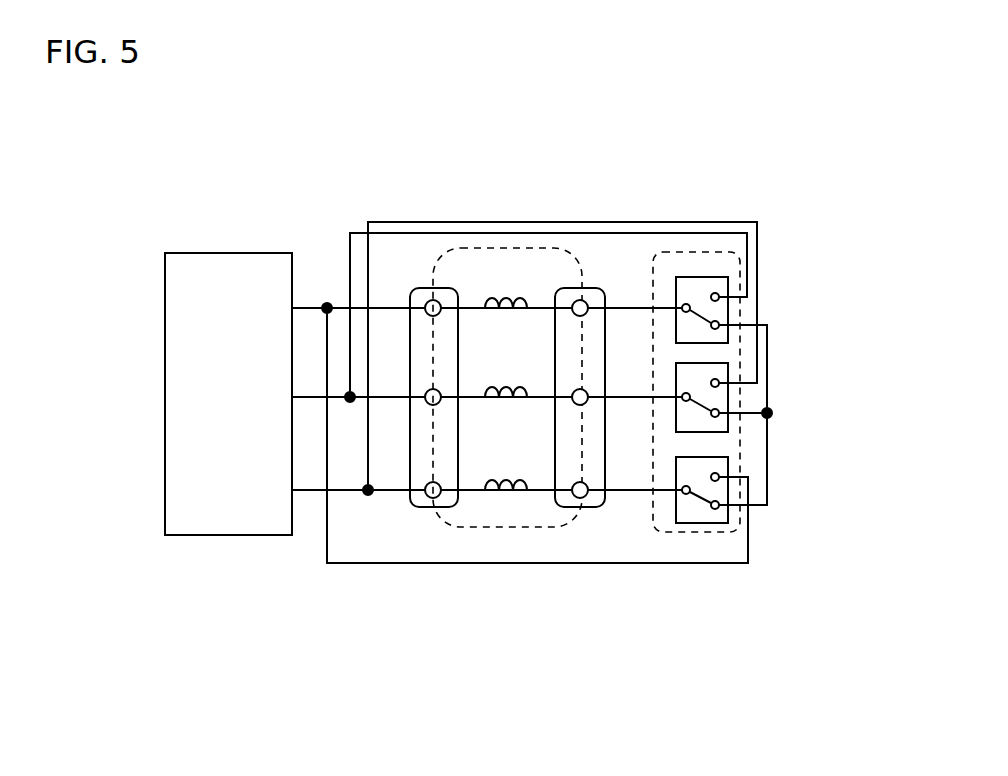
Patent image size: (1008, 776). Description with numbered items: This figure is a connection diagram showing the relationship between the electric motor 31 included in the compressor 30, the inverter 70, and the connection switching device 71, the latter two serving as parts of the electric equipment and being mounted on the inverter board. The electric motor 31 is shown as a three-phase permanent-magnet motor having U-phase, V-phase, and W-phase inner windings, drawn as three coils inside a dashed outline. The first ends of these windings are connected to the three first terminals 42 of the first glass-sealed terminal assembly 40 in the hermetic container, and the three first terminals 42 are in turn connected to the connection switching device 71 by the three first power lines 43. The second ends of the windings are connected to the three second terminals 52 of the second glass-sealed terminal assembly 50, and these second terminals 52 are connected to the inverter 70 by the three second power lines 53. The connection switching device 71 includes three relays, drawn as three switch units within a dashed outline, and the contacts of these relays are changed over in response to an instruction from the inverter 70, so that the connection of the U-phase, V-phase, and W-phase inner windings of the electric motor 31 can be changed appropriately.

The inverter 70 is at (225, 535).
The second power lines 53 is at (390, 305).
The second glass-sealed terminal assembly 50 is at (427, 508).
The second terminals 52 is at (440, 315).
The compressor 30 is at (478, 540).
The electric motor 31 is at (525, 530).
The first glass-sealed terminal assembly 40 is at (582, 510).
The first terminals 42 is at (573, 315).
The first power lines 43 is at (628, 306).
The connection switching device 71 is at (698, 535).